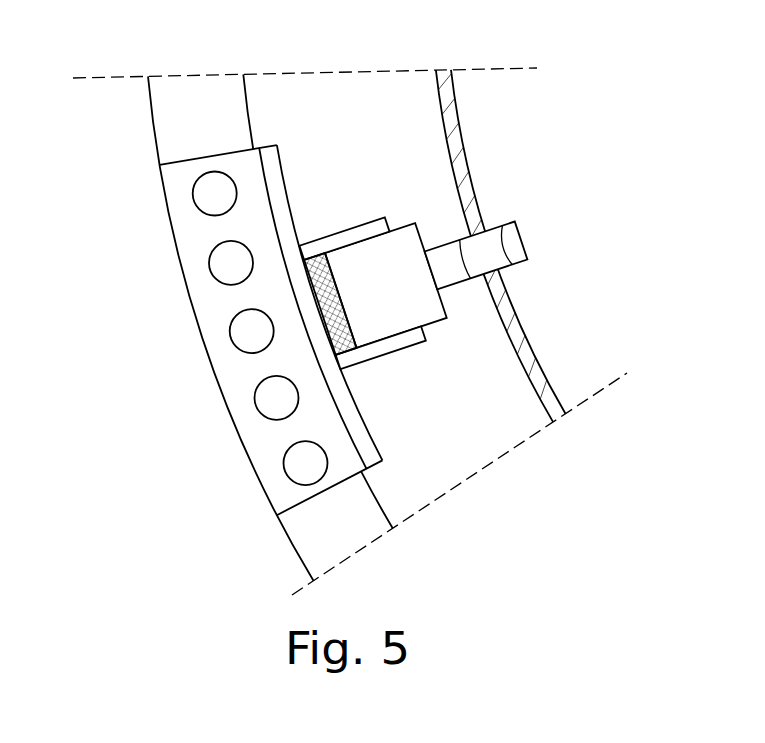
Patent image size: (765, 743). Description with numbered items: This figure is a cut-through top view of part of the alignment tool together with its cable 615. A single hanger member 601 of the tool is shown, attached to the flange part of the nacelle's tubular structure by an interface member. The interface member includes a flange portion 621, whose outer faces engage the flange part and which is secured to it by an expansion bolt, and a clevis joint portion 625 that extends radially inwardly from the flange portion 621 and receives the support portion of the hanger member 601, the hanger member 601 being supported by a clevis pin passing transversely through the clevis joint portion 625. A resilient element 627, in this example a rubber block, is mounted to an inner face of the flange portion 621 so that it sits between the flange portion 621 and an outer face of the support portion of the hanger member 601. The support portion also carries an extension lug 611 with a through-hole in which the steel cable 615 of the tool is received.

The hanger member 601 is at (400, 290).
The extension lug 611 is at (513, 242).
The cable 615 is at (448, 108).
The flange portion 621 is at (253, 367).
The clevis joint portion 625 is at (335, 238).
The resilient element 627 is at (322, 298).